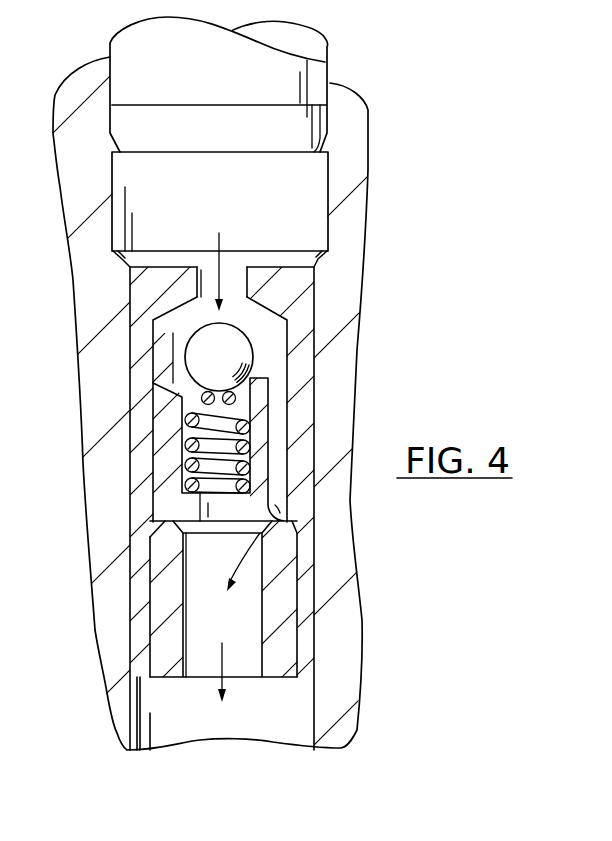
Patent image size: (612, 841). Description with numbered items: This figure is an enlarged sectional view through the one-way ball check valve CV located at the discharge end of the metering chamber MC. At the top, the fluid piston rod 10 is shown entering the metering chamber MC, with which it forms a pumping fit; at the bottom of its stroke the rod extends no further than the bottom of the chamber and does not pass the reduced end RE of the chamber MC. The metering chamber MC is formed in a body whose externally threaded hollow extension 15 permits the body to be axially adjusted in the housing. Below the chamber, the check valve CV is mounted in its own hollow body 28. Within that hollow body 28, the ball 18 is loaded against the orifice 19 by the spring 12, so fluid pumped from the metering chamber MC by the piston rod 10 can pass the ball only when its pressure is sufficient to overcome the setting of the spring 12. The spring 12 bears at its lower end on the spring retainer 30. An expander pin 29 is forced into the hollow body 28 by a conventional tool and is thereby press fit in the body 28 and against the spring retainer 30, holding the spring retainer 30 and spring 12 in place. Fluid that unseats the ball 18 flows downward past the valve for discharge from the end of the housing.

The fluid piston rod 10 is at (238, 73).
The metering chamber MC is at (248, 193).
The externally threaded hollow extension 15 is at (357, 230).
The reduced end RE is at (315, 265).
The orifice 19 is at (240, 267).
The ball 18 is at (198, 357).
The spring retainer 30 is at (168, 417).
The spring 12 is at (180, 447).
The hollow body 28 is at (140, 492).
The expander pin 29 is at (162, 617).
The one-way ball check valve CV is at (328, 381).